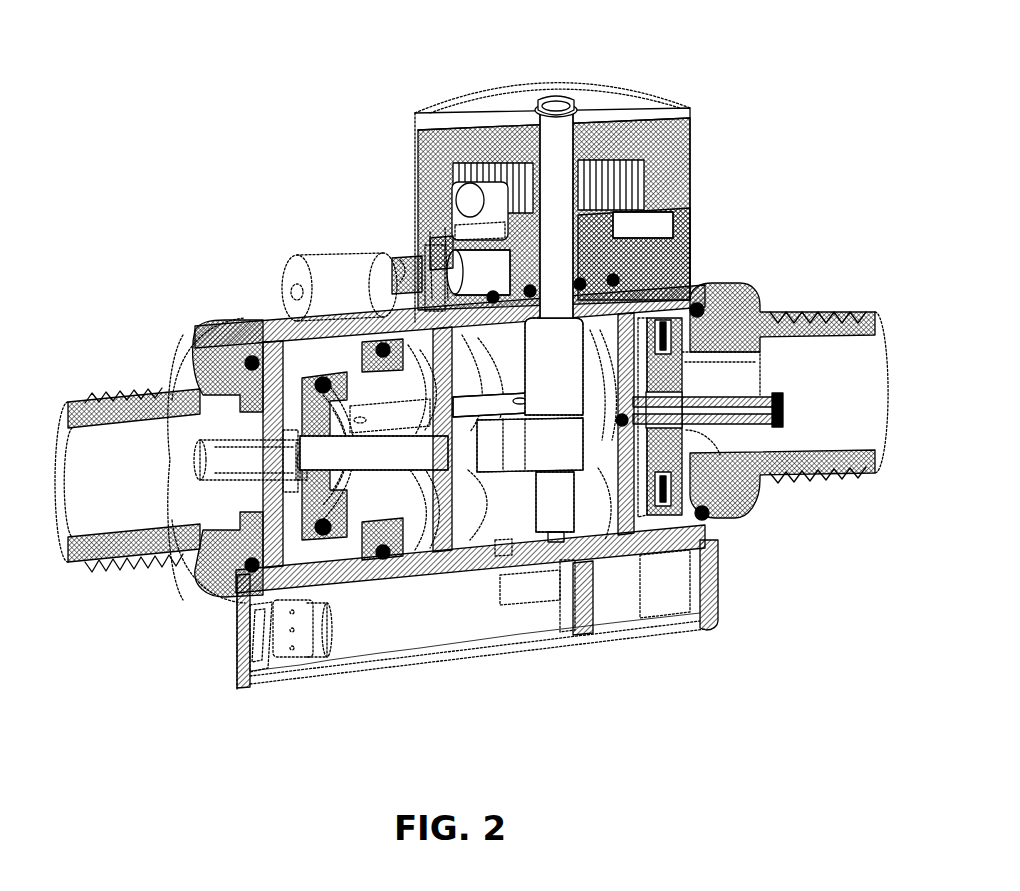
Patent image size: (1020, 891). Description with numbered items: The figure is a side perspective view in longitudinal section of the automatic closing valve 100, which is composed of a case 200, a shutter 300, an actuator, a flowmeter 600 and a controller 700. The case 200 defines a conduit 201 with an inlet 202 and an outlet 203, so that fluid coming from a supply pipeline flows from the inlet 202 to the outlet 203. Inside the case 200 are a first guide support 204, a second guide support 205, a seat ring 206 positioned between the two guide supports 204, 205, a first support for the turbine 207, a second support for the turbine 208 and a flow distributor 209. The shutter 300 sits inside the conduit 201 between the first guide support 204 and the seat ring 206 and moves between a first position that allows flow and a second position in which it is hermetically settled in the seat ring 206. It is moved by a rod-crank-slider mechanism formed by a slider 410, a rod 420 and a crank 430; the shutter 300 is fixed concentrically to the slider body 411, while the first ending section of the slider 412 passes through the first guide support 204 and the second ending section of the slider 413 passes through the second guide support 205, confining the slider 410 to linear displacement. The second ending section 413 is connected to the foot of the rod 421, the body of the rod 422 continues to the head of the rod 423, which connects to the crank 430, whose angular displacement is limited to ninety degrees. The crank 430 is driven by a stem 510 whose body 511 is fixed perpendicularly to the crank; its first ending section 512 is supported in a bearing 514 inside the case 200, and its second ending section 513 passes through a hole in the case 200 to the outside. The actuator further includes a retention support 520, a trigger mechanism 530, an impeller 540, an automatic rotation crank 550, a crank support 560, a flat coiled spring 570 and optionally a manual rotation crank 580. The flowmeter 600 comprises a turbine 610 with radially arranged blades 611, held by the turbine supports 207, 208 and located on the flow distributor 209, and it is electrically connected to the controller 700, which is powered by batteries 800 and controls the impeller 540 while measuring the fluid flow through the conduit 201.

The valve 100 is at (262, 133).
The case 200 is at (273, 597).
The conduit 201 is at (548, 603).
The inlet 202 is at (836, 437).
The outlet 203 is at (73, 513).
The first guide support 204 is at (250, 567).
The second guide support 205 is at (503, 540).
The seat ring 206 is at (403, 562).
The first support for the turbine 207 is at (632, 550).
The second support for the turbine 208 is at (778, 420).
The flow distributor 209 is at (690, 468).
The shutter 300 is at (330, 593).
The slider 410 is at (196, 467).
The slider body 411 is at (298, 457).
The first ending section of the slider 412 is at (312, 450).
The second ending section of the slider 413 is at (459, 458).
The rod 420 is at (462, 395).
The foot of the rod 421 is at (305, 345).
The body of the rod 422 is at (363, 410).
The head of the rod 423 is at (505, 465).
The crank 430 is at (513, 456).
The stem 510 is at (556, 103).
The body of the stem 511 is at (533, 396).
The first ending section of the stem 512 is at (534, 517).
The second ending section of the stem 513 is at (575, 212).
The bearing 514 is at (578, 563).
The retention support 520 is at (643, 253).
The trigger mechanism 530 is at (450, 238).
The impeller 540 is at (357, 244).
The automatic rotation crank 550 is at (647, 163).
The crank support 560 is at (677, 217).
The flat coiled spring 570 is at (603, 197).
The manual rotation crank 580 is at (683, 103).
The flowmeter 600 is at (720, 525).
The turbine 610 is at (687, 342).
The blades 611 is at (717, 381).
The controller 700 is at (687, 590).
The batteries 800 is at (347, 637).